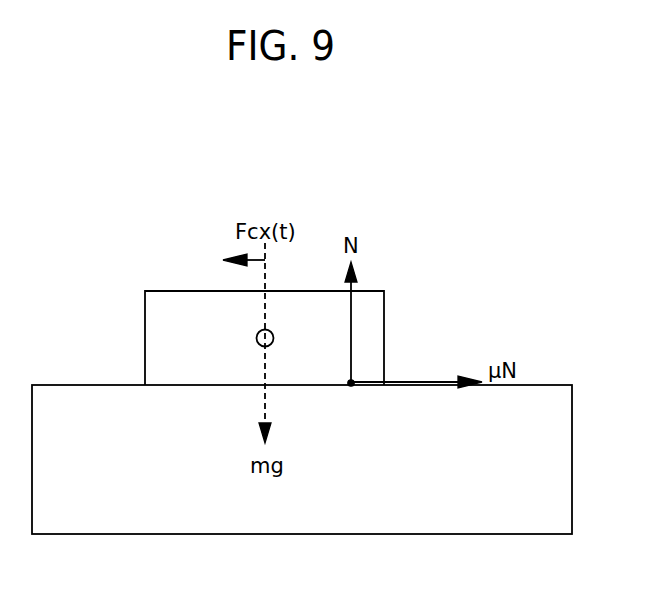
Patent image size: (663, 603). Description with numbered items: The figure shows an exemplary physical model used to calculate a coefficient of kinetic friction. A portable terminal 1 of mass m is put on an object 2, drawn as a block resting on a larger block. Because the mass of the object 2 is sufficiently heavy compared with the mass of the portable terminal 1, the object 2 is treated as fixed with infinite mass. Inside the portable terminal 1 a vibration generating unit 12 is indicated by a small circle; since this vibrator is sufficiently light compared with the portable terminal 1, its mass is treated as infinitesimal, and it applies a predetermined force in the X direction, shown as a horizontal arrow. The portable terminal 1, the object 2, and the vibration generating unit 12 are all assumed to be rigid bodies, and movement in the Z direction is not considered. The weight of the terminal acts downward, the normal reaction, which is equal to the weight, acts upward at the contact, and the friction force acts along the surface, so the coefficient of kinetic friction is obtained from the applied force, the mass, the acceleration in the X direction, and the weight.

The portable terminal 1 is at (368, 326).
The object 2 is at (567, 413).
The vibration generating unit 12 is at (256, 340).